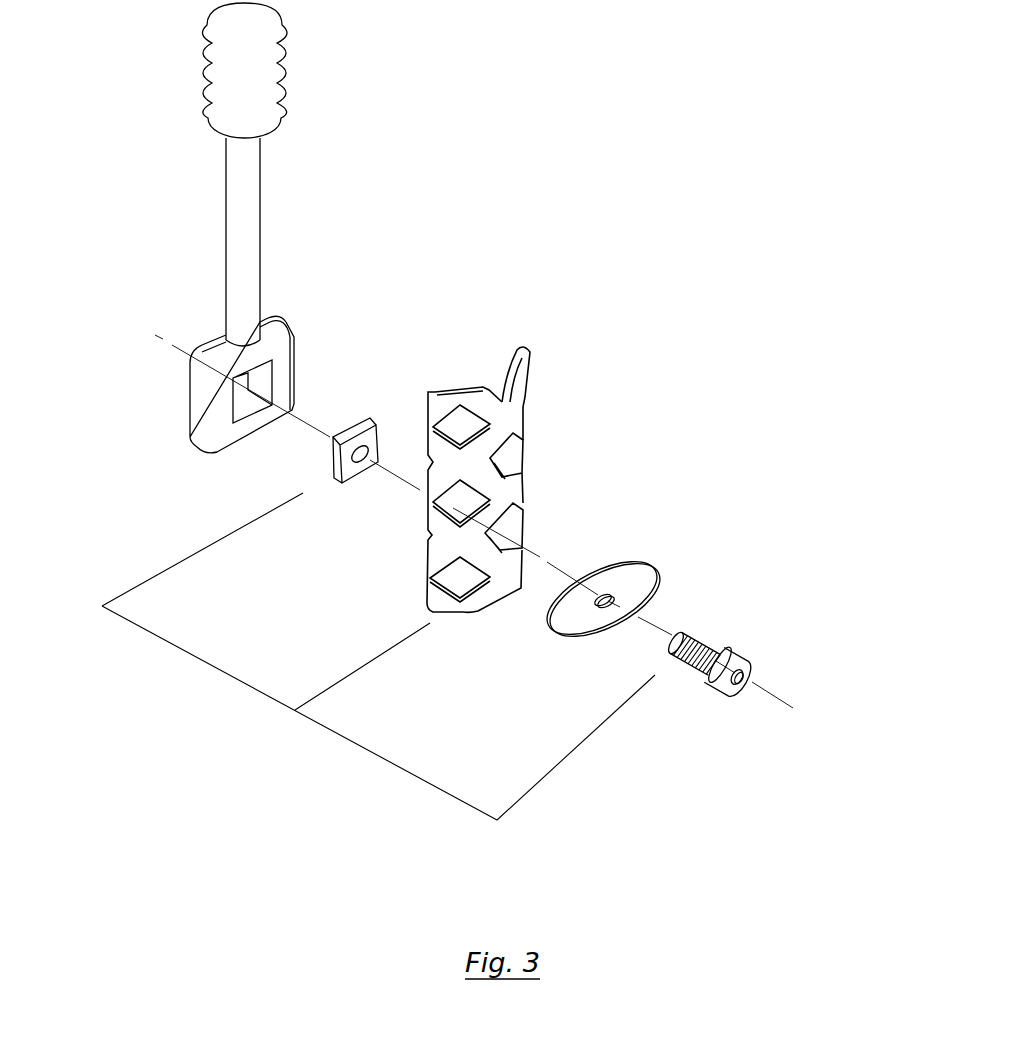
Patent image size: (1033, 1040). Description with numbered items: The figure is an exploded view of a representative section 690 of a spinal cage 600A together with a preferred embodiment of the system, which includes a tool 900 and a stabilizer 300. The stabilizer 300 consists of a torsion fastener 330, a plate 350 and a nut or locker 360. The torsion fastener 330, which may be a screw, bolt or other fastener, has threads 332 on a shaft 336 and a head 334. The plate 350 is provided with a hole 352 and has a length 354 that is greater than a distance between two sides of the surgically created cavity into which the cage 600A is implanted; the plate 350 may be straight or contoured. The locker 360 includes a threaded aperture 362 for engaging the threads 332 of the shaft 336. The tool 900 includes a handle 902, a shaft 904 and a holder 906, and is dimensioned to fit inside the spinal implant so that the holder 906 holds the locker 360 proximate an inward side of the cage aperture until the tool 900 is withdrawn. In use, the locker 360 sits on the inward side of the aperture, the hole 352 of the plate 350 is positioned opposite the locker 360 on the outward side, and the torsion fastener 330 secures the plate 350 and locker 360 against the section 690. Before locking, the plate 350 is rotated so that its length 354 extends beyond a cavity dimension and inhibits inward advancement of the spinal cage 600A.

The tool 900 is at (313, 76).
The handle 902 is at (185, 82).
The shaft 904 is at (262, 232).
The holder 906 is at (200, 405).
The stabilizer 300 is at (267, 703).
The nut or locker 360 is at (330, 484).
The threaded aperture 362 is at (369, 434).
The spinal cage 600A is at (543, 450).
The section of cage 690 is at (448, 540).
The plate 350 is at (637, 557).
The hole 352 is at (605, 590).
The length 354 is at (648, 572).
The torsion fastener 330 is at (723, 632).
The threads 332 is at (682, 668).
The shaft 336 is at (692, 630).
The head 334 is at (760, 673).